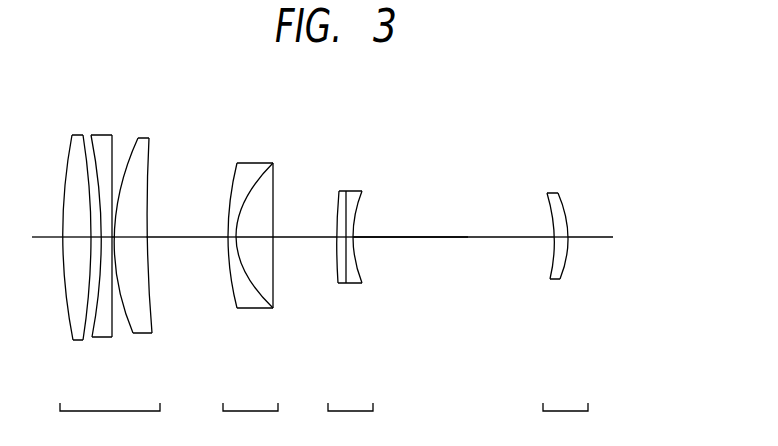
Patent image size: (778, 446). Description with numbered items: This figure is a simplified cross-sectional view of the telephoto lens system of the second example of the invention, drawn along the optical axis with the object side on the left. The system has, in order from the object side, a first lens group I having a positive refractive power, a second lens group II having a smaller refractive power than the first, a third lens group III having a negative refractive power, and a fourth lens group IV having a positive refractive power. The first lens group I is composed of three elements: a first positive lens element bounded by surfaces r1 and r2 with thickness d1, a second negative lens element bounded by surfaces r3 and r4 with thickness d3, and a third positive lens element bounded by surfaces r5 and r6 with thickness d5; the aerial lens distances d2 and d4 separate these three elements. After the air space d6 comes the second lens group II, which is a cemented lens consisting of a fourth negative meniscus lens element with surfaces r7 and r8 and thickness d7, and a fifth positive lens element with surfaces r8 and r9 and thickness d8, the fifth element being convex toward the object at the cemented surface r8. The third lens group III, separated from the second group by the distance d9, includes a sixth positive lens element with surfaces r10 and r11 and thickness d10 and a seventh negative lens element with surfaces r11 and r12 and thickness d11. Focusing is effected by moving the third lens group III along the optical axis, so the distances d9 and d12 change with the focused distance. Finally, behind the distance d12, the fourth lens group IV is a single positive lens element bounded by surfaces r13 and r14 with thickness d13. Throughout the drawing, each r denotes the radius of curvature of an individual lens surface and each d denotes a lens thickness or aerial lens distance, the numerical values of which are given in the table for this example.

The first lens surface r1 is at (69, 145).
The second lens surface r2 is at (80, 145).
The third lens surface r3 is at (90, 140).
The fourth lens surface r4 is at (112, 143).
The fifth lens surface r5 is at (130, 141).
The sixth lens surface r6 is at (150, 144).
The seventh lens surface r7 is at (236, 174).
The eighth lens surface r8 is at (257, 168).
The ninth lens surface r9 is at (276, 177).
The tenth lens surface r10 is at (339, 198).
The eleventh lens surface r11 is at (348, 195).
The twelfth lens surface r12 is at (362, 198).
The thirteenth lens surface r13 is at (548, 207).
The fourteenth lens surface r14 is at (563, 212).
The first lens thickness d1 is at (73, 238).
The first aerial lens distance d2 is at (95, 238).
The second lens thickness d3 is at (106, 240).
The second aerial lens distance d4 is at (115, 243).
The third lens thickness d5 is at (139, 240).
The aerial distance between first and second lens groups d6 is at (187, 240).
The fourth lens thickness d7 is at (232, 240).
The fifth lens thickness d8 is at (257, 240).
The aerial distance between second and third lens groups d9 is at (303, 240).
The sixth lens thickness d10 is at (342, 243).
The seventh lens thickness d11 is at (350, 243).
The aerial distance between third and fourth lens groups d12 is at (468, 238).
The eighth lens thickness d13 is at (555, 240).
The first lens group I is at (110, 421).
The second lens group II is at (250, 421).
The third lens group III is at (350, 421).
The fourth lens group IV is at (565, 420).